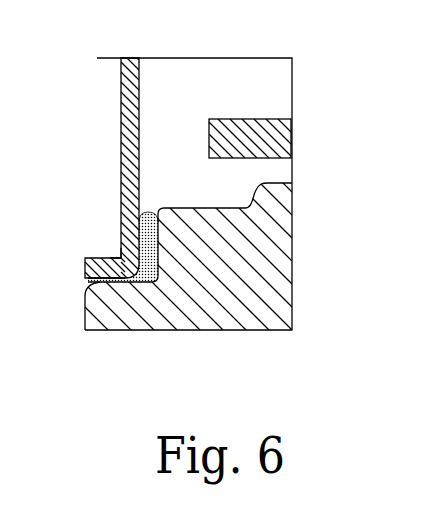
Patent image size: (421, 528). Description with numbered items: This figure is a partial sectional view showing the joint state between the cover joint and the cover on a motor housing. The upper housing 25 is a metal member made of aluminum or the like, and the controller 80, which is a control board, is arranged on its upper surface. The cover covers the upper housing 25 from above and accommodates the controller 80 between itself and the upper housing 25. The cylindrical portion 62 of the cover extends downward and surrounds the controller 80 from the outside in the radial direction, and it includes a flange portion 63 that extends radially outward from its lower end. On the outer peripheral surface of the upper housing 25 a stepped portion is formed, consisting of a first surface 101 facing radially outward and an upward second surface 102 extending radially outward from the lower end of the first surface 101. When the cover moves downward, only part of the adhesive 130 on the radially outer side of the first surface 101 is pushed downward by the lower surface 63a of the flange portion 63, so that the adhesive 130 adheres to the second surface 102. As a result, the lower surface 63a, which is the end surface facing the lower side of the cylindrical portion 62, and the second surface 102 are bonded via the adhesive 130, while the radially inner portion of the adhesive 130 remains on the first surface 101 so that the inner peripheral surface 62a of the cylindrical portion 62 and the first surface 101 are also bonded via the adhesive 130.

The upper housing 25 is at (301, 288).
The controller 80 is at (256, 128).
The cylindrical portion 62 is at (121, 141).
The inner peripheral surface 62a is at (153, 240).
The flange portion 63 is at (85, 270).
The lower surface 63a is at (97, 280).
The first surface 101 is at (148, 211).
The second surface 102 is at (118, 258).
The adhesive 130 is at (152, 282).